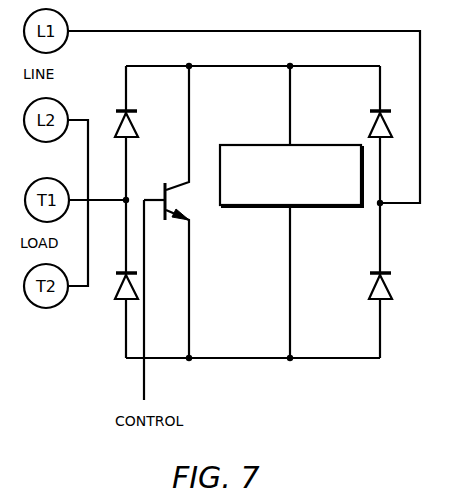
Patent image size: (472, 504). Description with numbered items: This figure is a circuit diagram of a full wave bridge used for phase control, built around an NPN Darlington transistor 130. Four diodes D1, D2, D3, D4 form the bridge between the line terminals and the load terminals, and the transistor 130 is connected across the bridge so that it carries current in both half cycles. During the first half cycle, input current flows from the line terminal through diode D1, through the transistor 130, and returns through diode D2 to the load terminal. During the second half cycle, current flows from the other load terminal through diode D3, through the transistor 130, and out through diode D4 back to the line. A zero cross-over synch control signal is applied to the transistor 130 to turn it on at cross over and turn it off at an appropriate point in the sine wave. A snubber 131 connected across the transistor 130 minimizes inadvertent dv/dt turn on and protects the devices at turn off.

The transistor 130 is at (186, 203).
The snubber 131 is at (245, 145).
The diode D1 is at (392, 124).
The diode D2 is at (138, 286).
The diode D3 is at (138, 124).
The diode D4 is at (392, 286).